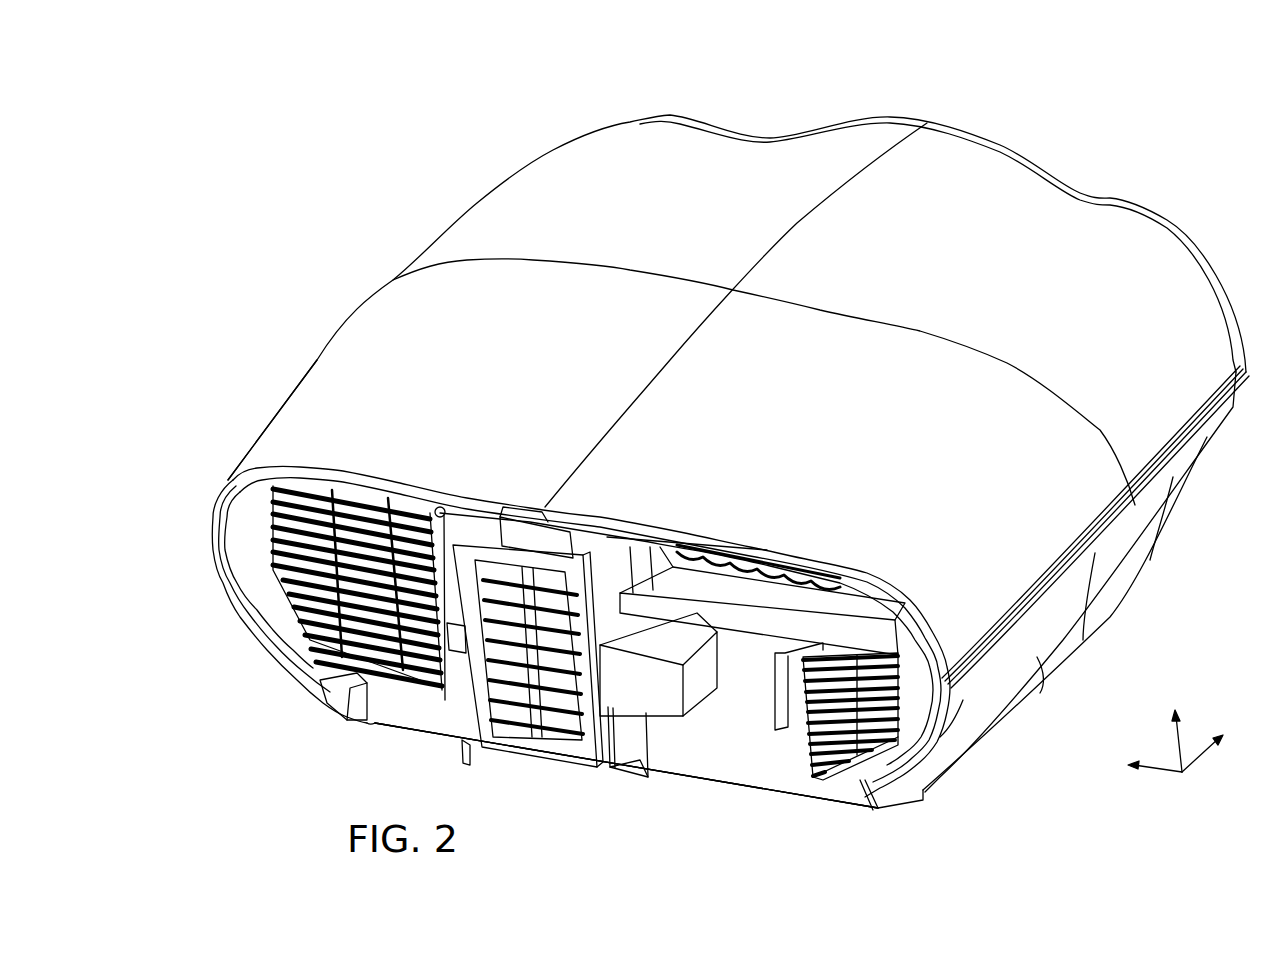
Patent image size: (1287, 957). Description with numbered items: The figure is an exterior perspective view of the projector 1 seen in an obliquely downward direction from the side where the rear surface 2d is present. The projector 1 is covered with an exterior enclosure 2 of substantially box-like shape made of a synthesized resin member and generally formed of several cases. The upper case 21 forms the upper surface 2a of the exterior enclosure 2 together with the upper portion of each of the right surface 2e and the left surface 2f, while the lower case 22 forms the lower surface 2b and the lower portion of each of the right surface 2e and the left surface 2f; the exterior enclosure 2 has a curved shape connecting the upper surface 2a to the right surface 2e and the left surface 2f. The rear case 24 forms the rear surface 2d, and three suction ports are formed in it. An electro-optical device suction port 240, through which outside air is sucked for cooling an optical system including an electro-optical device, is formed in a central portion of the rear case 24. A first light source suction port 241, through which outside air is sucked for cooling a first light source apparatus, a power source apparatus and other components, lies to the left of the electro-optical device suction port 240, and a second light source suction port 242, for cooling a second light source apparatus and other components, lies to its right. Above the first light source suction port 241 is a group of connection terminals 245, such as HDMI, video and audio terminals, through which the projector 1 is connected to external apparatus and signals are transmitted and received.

The projector 1 is at (1072, 121).
The exterior enclosure 2 is at (1157, 258).
The upper case 21 is at (557, 165).
The lower case 22 is at (1207, 445).
The rear case 24 is at (705, 778).
The electro-optical device suction port 240 is at (515, 723).
The first light source suction port 241 is at (827, 775).
The second light source suction port 242 is at (308, 650).
The group of connection terminals 245 is at (758, 593).
The upper surface 2a is at (640, 145).
The lower surface 2b is at (843, 817).
The rear surface 2d is at (401, 760).
The right surface 2e is at (318, 322).
The left surface 2f is at (1200, 498).